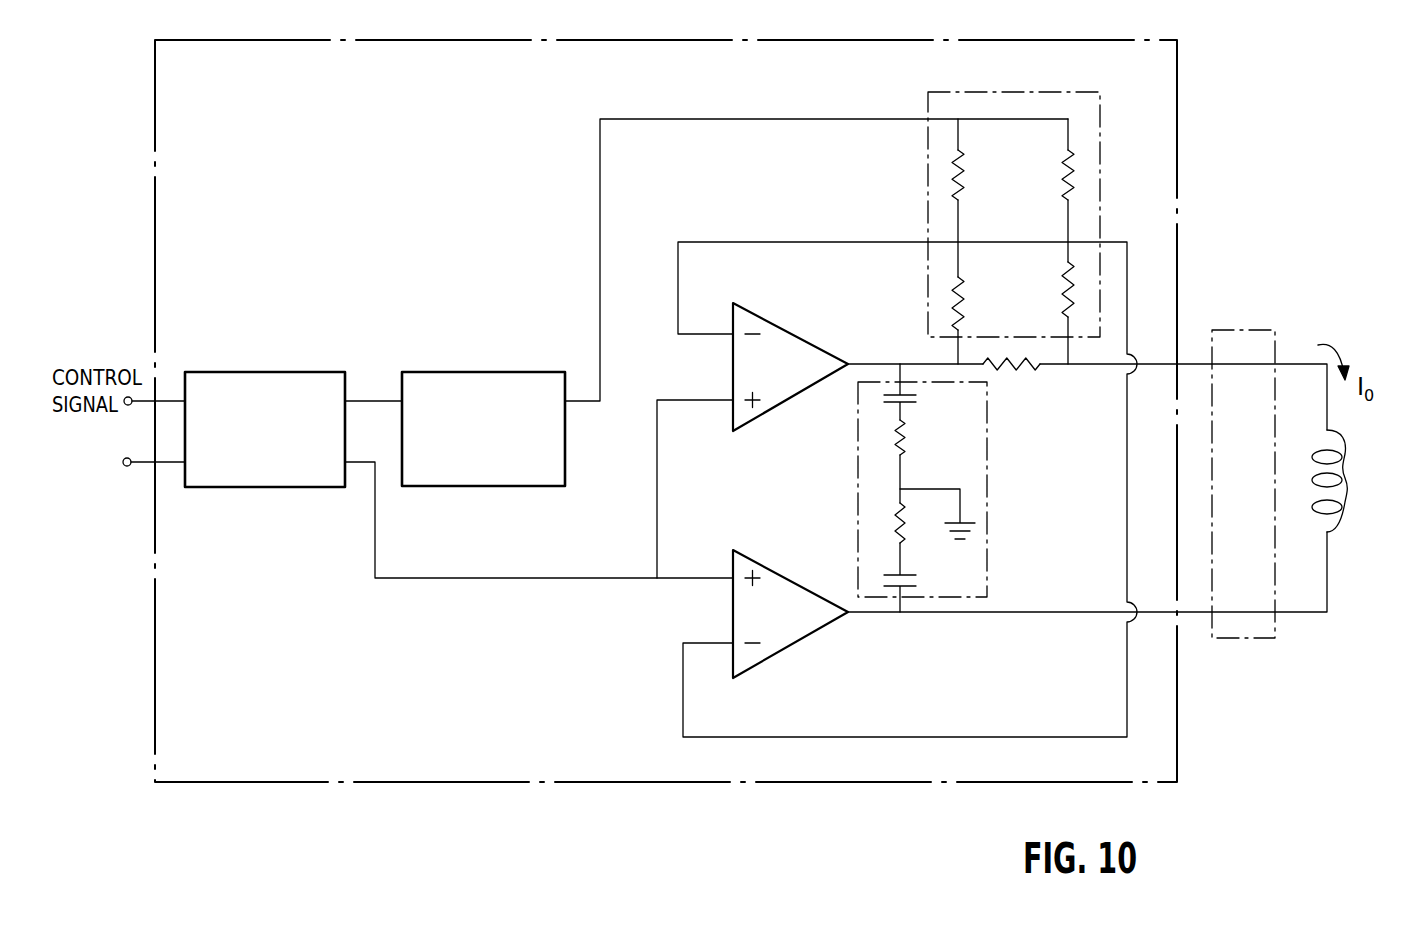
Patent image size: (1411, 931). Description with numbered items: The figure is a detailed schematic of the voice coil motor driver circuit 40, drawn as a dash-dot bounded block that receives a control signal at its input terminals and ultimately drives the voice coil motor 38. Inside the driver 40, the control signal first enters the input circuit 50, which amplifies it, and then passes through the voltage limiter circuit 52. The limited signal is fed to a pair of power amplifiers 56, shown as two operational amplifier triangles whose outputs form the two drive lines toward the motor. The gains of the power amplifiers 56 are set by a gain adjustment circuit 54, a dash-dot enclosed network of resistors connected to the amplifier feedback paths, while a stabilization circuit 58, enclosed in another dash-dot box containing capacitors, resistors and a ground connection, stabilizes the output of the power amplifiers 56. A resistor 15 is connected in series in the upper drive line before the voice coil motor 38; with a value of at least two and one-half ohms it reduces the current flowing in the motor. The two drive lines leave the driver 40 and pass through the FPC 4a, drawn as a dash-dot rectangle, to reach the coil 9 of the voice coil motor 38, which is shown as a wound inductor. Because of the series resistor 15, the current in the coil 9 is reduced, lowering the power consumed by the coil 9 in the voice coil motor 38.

The voice coil motor driver circuit 40 is at (701, 790).
The input circuit 50 is at (293, 488).
The voltage limiter circuit 52 is at (498, 488).
The power amplifiers 56 is at (772, 412).
The gain adjustment circuit 54 is at (1072, 92).
The resistor 15 is at (1015, 370).
The stabilization circuit 58 is at (987, 516).
The FPC 4a is at (1263, 315).
The coil 9 is at (1345, 482).
The voice coil motor 38 is at (1348, 522).